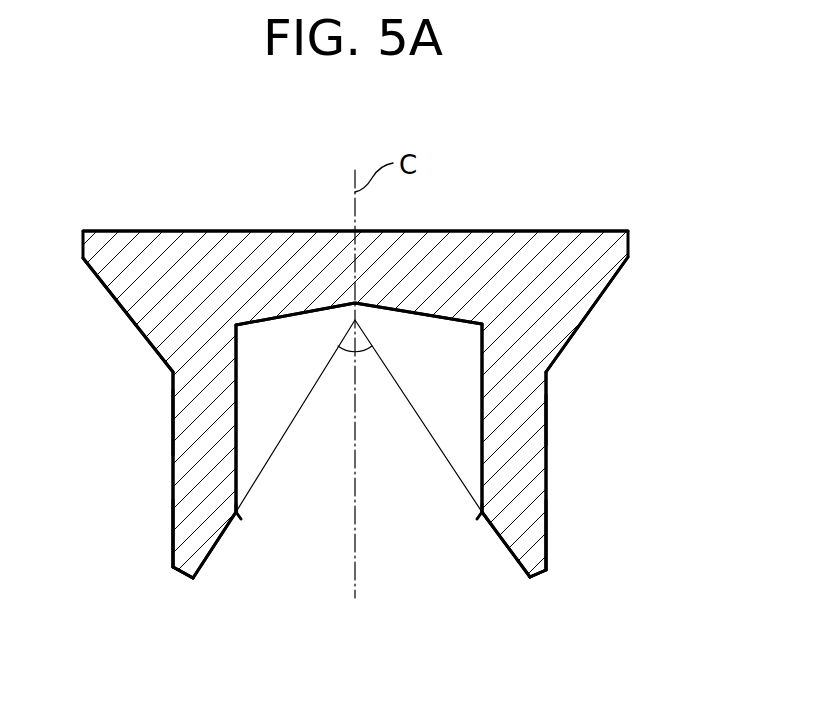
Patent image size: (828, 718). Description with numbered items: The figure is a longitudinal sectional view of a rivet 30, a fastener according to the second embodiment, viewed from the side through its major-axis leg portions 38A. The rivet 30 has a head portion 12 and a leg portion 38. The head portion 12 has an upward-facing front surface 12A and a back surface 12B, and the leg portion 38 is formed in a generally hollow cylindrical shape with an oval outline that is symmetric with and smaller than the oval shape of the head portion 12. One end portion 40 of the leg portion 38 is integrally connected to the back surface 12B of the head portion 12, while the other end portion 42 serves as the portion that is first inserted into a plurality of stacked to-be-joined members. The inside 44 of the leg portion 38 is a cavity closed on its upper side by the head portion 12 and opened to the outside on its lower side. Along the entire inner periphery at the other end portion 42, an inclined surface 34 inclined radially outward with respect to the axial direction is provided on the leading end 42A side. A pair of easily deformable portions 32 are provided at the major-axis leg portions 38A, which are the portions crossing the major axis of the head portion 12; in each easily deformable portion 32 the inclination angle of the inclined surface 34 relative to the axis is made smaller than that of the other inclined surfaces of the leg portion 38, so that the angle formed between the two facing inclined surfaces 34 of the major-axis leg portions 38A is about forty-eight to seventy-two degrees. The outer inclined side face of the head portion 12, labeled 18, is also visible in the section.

The head portion 12 is at (587, 230).
The front surface 12A is at (147, 231).
The back surface 12B is at (460, 323).
The inclined side surface 18 is at (605, 292).
The rivet 30 is at (550, 177).
The easily deformable portion 32 is at (237, 513).
The inclined surface 34 is at (218, 540).
The leg portion 38 is at (173, 400).
The major-axis leg portion 38A is at (173, 443).
The one end portion 40 is at (523, 387).
The other end portion 42 is at (546, 553).
The leading end 42A is at (195, 577).
The inside 44 is at (372, 477).